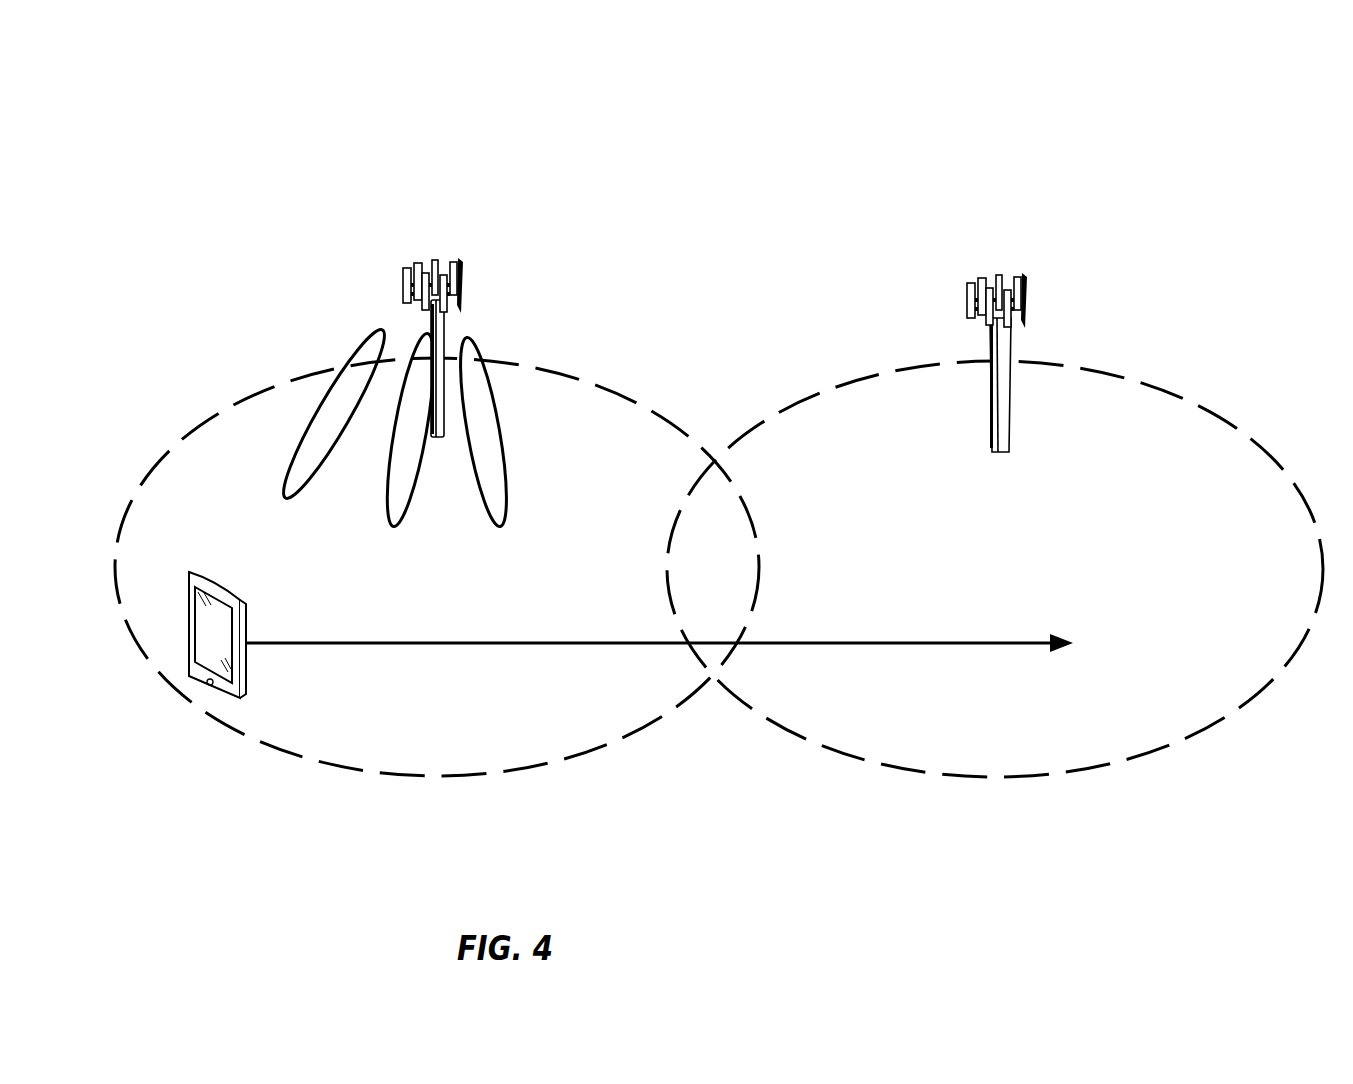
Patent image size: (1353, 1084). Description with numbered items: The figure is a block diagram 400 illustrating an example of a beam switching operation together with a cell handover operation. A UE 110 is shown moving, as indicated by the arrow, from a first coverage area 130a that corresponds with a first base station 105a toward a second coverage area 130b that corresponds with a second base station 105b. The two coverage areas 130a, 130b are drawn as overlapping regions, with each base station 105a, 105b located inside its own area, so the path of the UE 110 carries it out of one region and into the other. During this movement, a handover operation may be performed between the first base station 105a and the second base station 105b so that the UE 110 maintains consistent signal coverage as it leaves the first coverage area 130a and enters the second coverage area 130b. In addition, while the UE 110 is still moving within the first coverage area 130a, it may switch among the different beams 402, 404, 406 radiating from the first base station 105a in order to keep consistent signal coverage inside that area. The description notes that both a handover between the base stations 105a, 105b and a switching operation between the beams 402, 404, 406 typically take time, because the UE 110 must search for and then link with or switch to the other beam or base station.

The wireless communications system 400 is at (149, 84).
The first base station 105a is at (457, 281).
The second base station 105b is at (1025, 294).
The UE 110 is at (189, 572).
The first coverage area 130a is at (187, 430).
The second coverage area 130b is at (847, 384).
The beam 402 is at (370, 356).
The beam 404 is at (420, 347).
The beam 406 is at (477, 360).